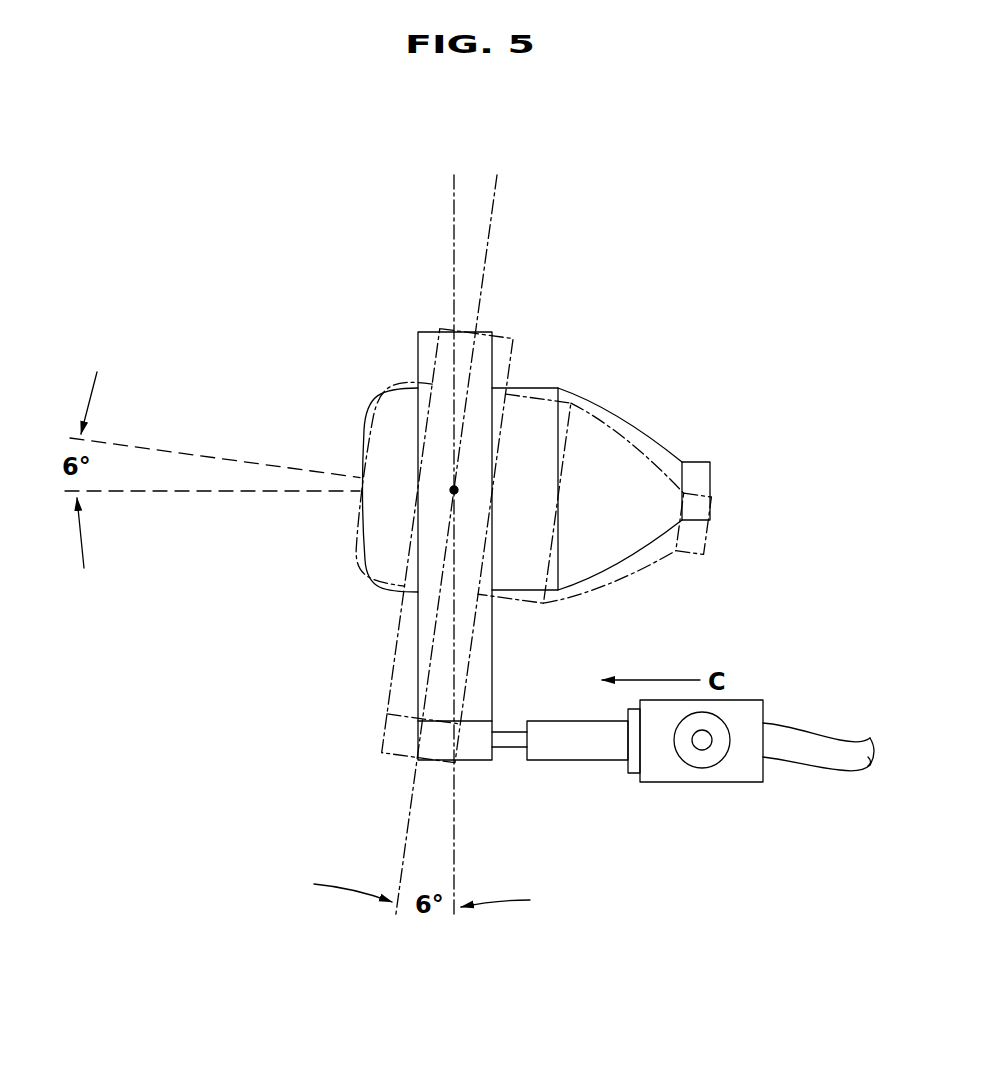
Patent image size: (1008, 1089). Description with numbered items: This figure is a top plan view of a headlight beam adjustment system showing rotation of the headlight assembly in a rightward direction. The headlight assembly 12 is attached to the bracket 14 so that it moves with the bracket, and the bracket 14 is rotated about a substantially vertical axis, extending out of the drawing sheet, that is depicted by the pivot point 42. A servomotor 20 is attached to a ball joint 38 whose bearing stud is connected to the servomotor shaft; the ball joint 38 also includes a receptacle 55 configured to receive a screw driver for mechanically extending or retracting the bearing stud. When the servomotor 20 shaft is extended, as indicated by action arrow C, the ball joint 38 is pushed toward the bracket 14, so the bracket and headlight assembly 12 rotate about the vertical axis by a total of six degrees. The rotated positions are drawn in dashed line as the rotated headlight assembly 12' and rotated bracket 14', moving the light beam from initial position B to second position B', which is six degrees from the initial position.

The headlight assembly 12 is at (557, 476).
The rotated headlight assembly 12' is at (557, 504).
The bracket 14 is at (405, 510).
The rotated bracket 14' is at (510, 536).
The servomotor 20 is at (735, 782).
The ball joint 38 is at (573, 760).
The pivot point 42 is at (454, 490).
The receptacle 55 is at (694, 768).